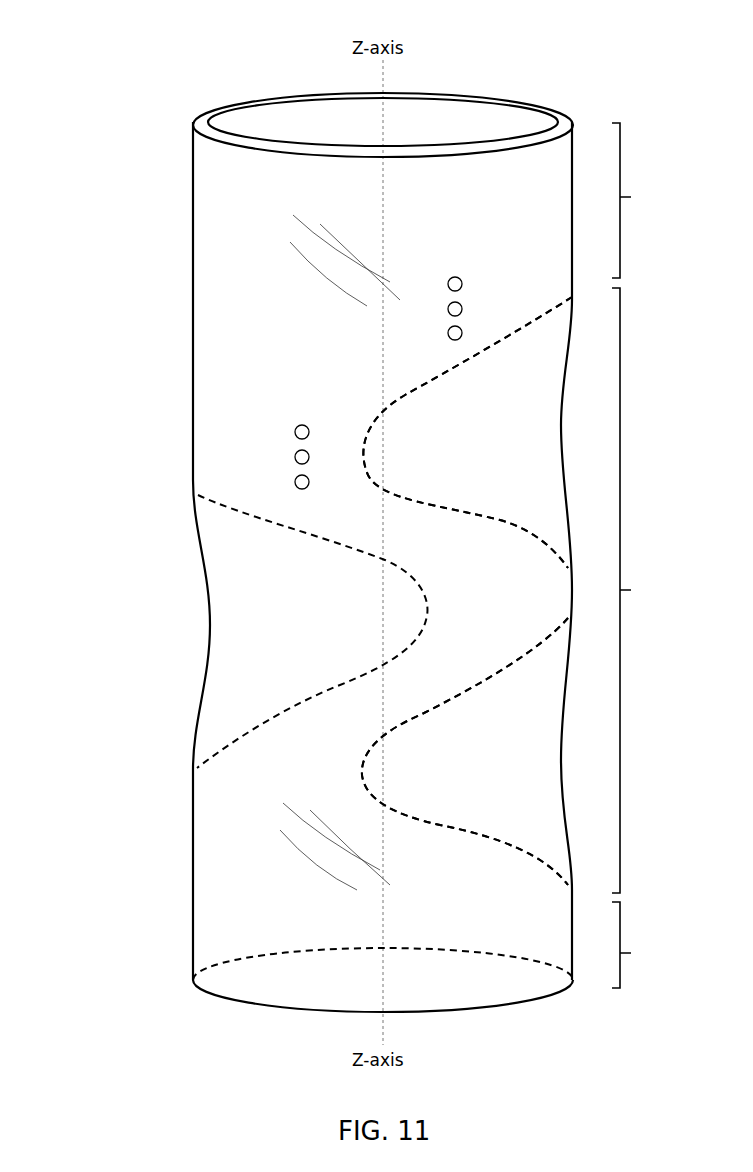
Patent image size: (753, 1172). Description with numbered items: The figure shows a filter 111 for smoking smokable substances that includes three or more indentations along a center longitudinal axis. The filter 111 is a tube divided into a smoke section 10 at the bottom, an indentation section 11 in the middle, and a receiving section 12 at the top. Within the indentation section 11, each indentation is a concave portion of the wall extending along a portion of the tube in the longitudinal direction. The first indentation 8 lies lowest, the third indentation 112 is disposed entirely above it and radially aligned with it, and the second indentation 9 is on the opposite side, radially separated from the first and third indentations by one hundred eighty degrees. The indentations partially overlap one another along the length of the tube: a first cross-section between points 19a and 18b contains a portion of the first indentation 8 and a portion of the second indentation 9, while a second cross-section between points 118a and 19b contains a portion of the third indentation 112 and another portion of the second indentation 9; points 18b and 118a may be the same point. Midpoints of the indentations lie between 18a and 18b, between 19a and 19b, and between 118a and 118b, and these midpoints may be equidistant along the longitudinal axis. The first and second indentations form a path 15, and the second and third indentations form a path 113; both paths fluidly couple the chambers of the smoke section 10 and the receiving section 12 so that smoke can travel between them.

The filter 111 is at (100, 59).
The receiving section 12 is at (640, 200).
The indentation section 11 is at (640, 590).
The smoke section 10 is at (640, 945).
The end point of third indentation 118b is at (563, 291).
The end point of third indentation 118a is at (560, 566).
The end point of first indentation 18b is at (560, 616).
The end point of first indentation 18a is at (556, 906).
The end point of second indentation 19b is at (210, 473).
The end point of second indentation 19a is at (216, 783).
The third indentation 112 is at (467, 422).
The path 113 is at (467, 432).
The second indentation 9 is at (312, 596).
The path 15 is at (465, 751).
The first indentation 8 is at (465, 751).